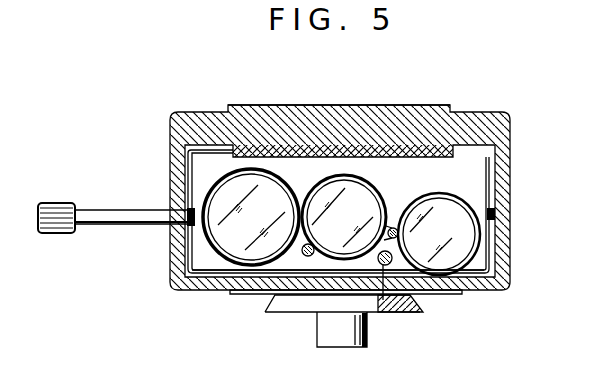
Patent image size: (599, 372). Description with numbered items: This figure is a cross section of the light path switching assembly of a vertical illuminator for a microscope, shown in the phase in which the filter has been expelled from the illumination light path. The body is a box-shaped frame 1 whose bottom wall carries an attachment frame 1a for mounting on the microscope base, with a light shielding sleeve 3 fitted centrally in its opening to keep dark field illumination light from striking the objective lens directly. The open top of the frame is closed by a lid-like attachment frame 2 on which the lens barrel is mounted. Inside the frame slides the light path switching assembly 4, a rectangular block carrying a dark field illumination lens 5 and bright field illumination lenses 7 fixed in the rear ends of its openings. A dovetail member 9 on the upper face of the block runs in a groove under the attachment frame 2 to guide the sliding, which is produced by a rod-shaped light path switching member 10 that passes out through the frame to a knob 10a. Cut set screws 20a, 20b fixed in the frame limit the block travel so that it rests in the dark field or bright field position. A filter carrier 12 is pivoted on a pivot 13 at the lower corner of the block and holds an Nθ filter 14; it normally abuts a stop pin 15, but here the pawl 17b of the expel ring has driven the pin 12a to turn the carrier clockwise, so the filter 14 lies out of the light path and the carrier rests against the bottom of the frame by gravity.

The box-shaped frame 1 is at (176, 240).
The attachment frame 1a is at (266, 300).
The attachment frame 2 is at (271, 125).
The light shielding sleeve 3 is at (317, 333).
The light path switching assembly 4 is at (215, 268).
The dark field illumination lens 5 is at (276, 200).
The bright field illumination lenses 7 is at (365, 200).
The dovetail member 9 is at (217, 152).
The light path switching member 10 is at (103, 213).
The knob 10a is at (72, 233).
The filter carrier 12 is at (480, 245).
The pin 12a is at (400, 240).
The pivot 13 is at (384, 302).
The Nθ filter 14 is at (416, 200).
The stop pin 15 is at (326, 258).
The pawl 17b is at (413, 290).
The cut set screw 20a is at (488, 208).
The cut set screw 20b is at (186, 207).